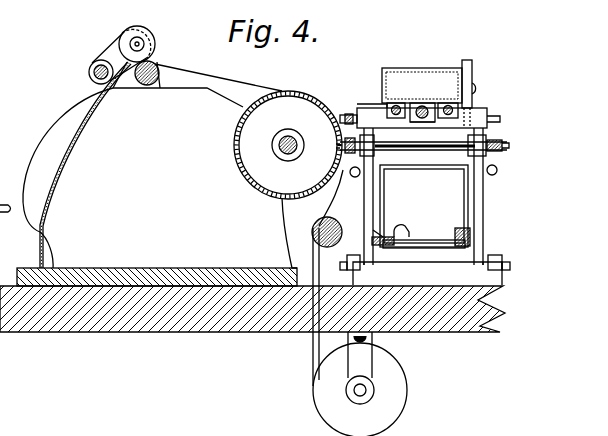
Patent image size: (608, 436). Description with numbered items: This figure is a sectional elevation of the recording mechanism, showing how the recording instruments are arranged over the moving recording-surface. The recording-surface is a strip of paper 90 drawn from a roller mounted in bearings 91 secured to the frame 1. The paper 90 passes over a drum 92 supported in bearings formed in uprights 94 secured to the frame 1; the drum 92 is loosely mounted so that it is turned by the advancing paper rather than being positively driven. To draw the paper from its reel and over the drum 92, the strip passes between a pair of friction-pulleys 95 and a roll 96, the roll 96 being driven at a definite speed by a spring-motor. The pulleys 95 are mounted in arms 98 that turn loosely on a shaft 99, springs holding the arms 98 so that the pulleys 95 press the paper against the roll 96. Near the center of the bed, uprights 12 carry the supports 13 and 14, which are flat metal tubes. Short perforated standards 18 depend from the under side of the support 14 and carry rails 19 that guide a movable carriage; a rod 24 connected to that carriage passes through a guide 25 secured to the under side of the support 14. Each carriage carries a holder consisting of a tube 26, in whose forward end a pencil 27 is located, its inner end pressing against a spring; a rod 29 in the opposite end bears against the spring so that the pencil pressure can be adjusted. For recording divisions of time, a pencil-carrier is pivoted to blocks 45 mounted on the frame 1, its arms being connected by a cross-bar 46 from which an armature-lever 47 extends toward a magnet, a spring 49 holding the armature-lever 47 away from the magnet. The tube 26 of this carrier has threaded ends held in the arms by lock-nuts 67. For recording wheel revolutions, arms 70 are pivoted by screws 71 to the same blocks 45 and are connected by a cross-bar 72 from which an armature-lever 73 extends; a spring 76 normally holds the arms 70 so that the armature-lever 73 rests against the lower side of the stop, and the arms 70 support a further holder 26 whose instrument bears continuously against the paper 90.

The frame 1 is at (208, 333).
The uprights 12 is at (473, 106).
The support 13 is at (423, 194).
The support 14 is at (443, 68).
The standards 18 is at (398, 105).
The rails 19 is at (387, 108).
The rod 24 is at (440, 106).
The guide 25 is at (425, 119).
The tube 26 is at (407, 177).
The pencil 27 is at (347, 112).
The rod 29 is at (510, 138).
The blocks 45 is at (440, 280).
The cross-bar 46 is at (395, 232).
The armature-lever 47 is at (387, 248).
The spring 49 is at (495, 174).
The lock-nuts 67 is at (376, 143).
The arms 70 is at (363, 218).
The screws 71 is at (352, 258).
The cross-bar 72 is at (440, 233).
The armature-lever 73 is at (467, 248).
The spring 76 is at (353, 176).
The strip of paper 90 is at (64, 132).
The bearings 91 is at (360, 384).
The drum 92 is at (288, 145).
The uprights 94 is at (157, 252).
The friction-pulleys 95 is at (139, 21).
The roll 96 is at (158, 64).
The arms 98 is at (109, 51).
The shaft 99 is at (89, 70).